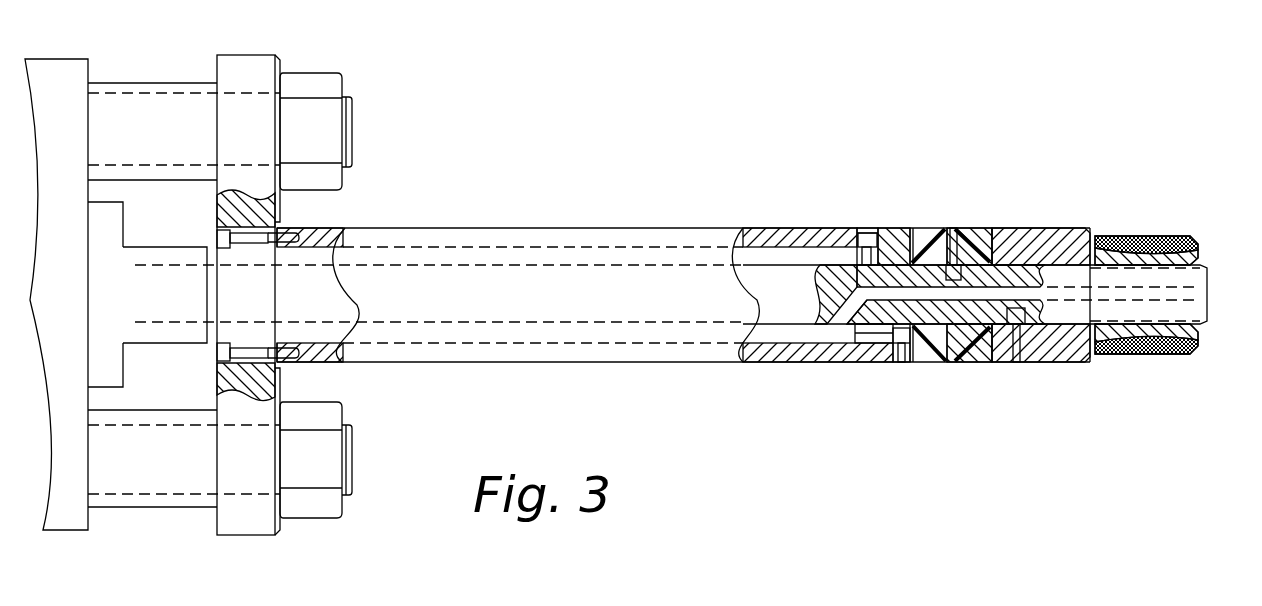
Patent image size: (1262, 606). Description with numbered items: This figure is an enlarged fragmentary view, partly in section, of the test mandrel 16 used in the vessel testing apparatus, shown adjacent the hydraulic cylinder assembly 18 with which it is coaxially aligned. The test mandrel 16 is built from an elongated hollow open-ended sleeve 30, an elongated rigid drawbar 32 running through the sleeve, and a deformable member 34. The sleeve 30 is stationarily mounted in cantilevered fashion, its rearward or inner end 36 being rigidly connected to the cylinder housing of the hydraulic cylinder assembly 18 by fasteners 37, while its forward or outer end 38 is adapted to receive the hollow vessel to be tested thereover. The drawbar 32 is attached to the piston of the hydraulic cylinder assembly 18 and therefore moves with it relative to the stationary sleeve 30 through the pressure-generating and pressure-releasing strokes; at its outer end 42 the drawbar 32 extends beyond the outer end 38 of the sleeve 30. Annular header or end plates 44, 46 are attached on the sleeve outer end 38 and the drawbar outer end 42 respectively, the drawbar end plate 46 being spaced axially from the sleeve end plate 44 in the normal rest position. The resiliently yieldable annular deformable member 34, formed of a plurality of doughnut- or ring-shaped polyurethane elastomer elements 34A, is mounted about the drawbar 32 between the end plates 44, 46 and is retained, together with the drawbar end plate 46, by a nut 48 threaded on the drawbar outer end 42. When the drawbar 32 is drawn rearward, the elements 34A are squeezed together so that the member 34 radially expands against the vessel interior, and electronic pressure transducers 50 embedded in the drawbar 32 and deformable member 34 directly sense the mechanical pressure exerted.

The test mandrel 16 is at (703, 166).
The hydraulic cylinder assembly 18 is at (150, 514).
The hollow sleeve 30 is at (559, 370).
The drawbar 32 is at (658, 336).
The deformable member 34 is at (1001, 190).
The ring-shaped elements 34A is at (1035, 363).
The inner end of sleeve 36 is at (312, 228).
The fasteners 37 is at (246, 243).
The outer end of sleeve 38 is at (872, 363).
The outer end of drawbar 42 is at (1192, 278).
The sleeve end plate 44 is at (893, 228).
The drawbar end plate 46 is at (1075, 228).
The nut 48 is at (1128, 356).
The electronic pressure transducers 50 is at (956, 278).